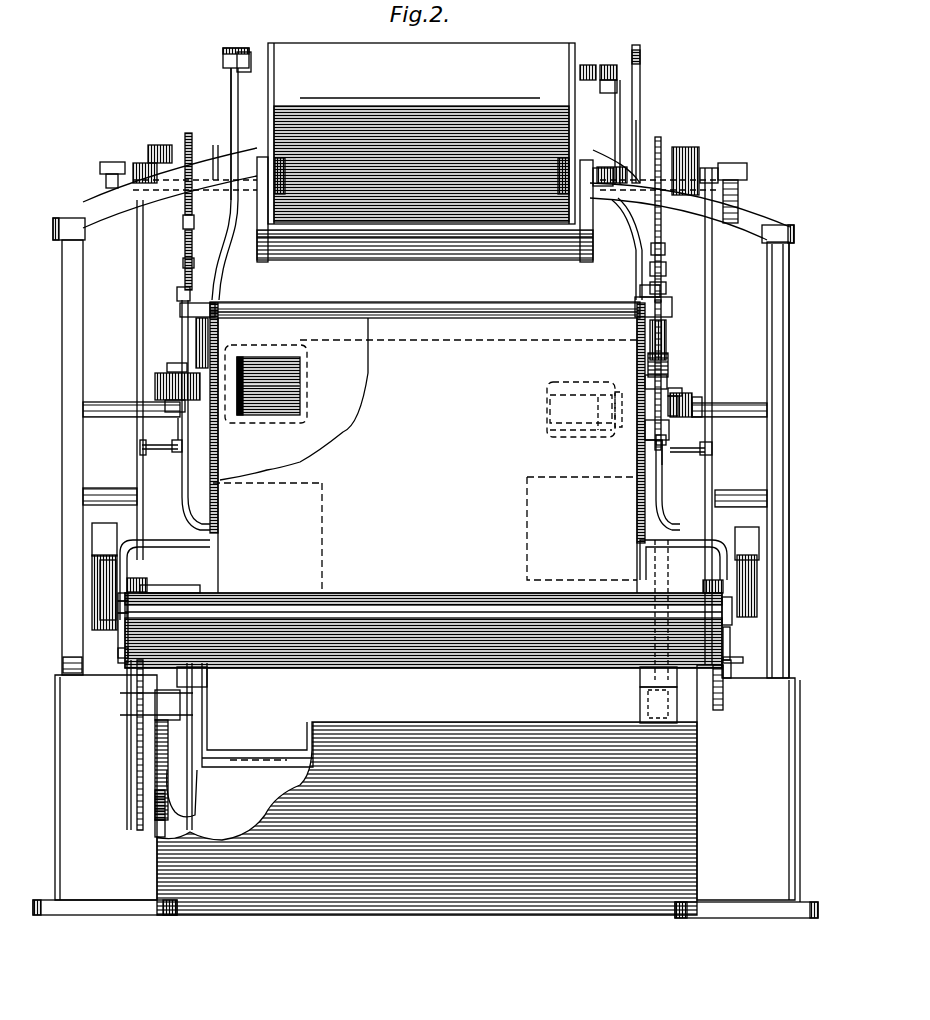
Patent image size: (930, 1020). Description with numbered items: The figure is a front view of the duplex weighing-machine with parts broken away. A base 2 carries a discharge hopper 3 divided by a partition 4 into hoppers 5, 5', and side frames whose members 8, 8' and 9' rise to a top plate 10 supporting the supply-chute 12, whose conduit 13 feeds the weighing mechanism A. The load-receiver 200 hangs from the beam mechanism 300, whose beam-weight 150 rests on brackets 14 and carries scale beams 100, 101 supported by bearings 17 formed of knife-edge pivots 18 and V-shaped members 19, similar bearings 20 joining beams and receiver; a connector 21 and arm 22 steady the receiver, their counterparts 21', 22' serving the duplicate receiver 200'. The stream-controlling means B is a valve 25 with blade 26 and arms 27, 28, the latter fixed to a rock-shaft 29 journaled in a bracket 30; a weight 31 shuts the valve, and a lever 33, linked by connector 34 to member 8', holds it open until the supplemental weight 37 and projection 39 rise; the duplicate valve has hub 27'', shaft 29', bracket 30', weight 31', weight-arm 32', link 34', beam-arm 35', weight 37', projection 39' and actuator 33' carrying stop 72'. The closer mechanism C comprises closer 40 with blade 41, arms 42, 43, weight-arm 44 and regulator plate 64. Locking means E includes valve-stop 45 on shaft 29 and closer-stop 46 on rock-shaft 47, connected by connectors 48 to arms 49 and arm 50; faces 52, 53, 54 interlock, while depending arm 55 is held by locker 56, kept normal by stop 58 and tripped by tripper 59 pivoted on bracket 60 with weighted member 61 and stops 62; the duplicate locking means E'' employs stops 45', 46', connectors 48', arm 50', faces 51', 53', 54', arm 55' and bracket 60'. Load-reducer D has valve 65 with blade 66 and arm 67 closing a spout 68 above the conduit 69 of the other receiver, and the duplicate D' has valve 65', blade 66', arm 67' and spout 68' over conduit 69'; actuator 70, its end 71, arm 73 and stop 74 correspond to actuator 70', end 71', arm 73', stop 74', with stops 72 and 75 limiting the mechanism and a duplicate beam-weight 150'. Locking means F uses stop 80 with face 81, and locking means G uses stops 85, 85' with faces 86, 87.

The base 2 is at (710, 880).
The material-discharge hopper 3 is at (185, 852).
The partition 4 is at (246, 765).
The hopper 5 is at (143, 820).
The hopper 5' is at (132, 804).
The side frame 8 is at (749, 423).
The side-frame member 8' is at (801, 460).
The side-frame member 9' is at (98, 437).
The top plate 10 is at (752, 213).
The material-supply chute 12 is at (575, 58).
The supply conduit 13 is at (340, 212).
The supporting brackets 14 is at (735, 733).
The adjustable bearings 17 is at (125, 655).
The knife-edge pivots 18 is at (147, 592).
The V-shaped bearing members 19 is at (112, 620).
The bearings 20 is at (152, 585).
The connector 21 is at (218, 64).
The bracket 21' is at (630, 74).
The upwardly-extending arm 22 is at (211, 134).
The rod 22' is at (673, 127).
The valve 25 is at (505, 248).
The valve blade 26 is at (462, 248).
The valve-arm 27 is at (240, 184).
The hub 27'' is at (613, 151).
The valve-arm 28 is at (592, 212).
The rock-shaft 29 is at (734, 162).
The bracket 29' is at (216, 150).
The bracket 30 is at (755, 197).
The bracket 30' is at (101, 170).
The valve weight 31 is at (705, 160).
The gear 31' is at (160, 140).
The collar 32' is at (138, 157).
The valve-actuator 33 is at (720, 450).
The supply-valve actuator 33' is at (120, 320).
The link 34 is at (741, 488).
The bar 34' is at (128, 489).
The collar 35' is at (139, 611).
The supplemental weight 37 is at (775, 539).
The gear housing 37' is at (109, 511).
The projection 39 is at (739, 676).
The gear 39' is at (73, 582).
The closer 40 is at (220, 748).
The closer blade 41 is at (215, 728).
The closer-arm 42 is at (662, 718).
The closer-arm 43 is at (202, 716).
The weight-arm 44 is at (640, 648).
The valve-stop 45 is at (692, 205).
The rod 45' is at (190, 162).
The closer-stop 46 is at (673, 339).
The rod 46' is at (173, 260).
The rock-shaft 47 is at (425, 300).
The connectors 48 is at (472, 423).
The slide rod 48' is at (431, 415).
The arms 49 is at (205, 683).
The arm 50 is at (426, 297).
The bracket 50' is at (675, 286).
The shaft 51' is at (195, 204).
The stop-face 52 is at (662, 270).
The stop-face 53 is at (669, 212).
The collar 53' is at (179, 225).
The stop-face 54 is at (645, 242).
The collar 54' is at (174, 262).
The depending arm 55 is at (675, 340).
The depending arm 55' is at (230, 343).
The locker 56 is at (668, 364).
The stop 58 is at (648, 381).
The locker-tripper 59 is at (646, 432).
The bracket 60 is at (729, 420).
The shaft 60' is at (131, 421).
The weighted member 61 is at (702, 407).
The stops 62 is at (695, 403).
The regulator plate 64 is at (206, 785).
The load-reducing valve 65 is at (289, 386).
The load-reducing valve 65' is at (559, 409).
The valve blade 66 is at (289, 388).
The roller shaft 66' is at (559, 429).
The valve-arm 67 is at (255, 376).
The roller end 67' is at (573, 428).
The spout 68 is at (279, 374).
The housing 68' is at (564, 409).
The plate 69 is at (564, 526).
The stream-receiving conduit 69' is at (278, 523).
The load-reducer actuator 70 is at (209, 429).
The load-reducer actuator 70' is at (642, 467).
The actuator end 71 is at (164, 438).
The pin 71' is at (647, 455).
The pin 72 is at (687, 464).
The stop 72' is at (159, 457).
The actuator arm 73 is at (148, 398).
The actuator arm 73' is at (713, 386).
The valve stop 74 is at (149, 357).
The reducing-valve stop 74' is at (713, 367).
The gear 75 is at (160, 390).
The stop 80 is at (641, 115).
The stop-face 81 is at (641, 50).
The closer-stop 85 is at (147, 694).
The closer-stop 85' is at (128, 745).
The stop-face 86 is at (160, 715).
The stop-face 87 is at (165, 760).
The scale beam 100 is at (750, 568).
The scale beam 101 is at (138, 578).
The beam-weight 150 is at (423, 641).
The bearing housing 150' is at (165, 563).
The load-receiver 200 is at (425, 300).
The load-receiver 200' is at (428, 381).
The beam mechanism 300 is at (710, 580).
The weighing mechanism A is at (427, 455).
The stream-controlling means B is at (600, 211).
The material-discharge means C is at (265, 775).
The load-reducing means D is at (186, 334).
The load-reducing means D' is at (688, 372).
The valve-closer-locking means E is at (672, 262).
The slide E'' is at (207, 222).
The reciprocally-effective locking means F is at (655, 83).
The reciprocally-effective locking means G is at (169, 705).